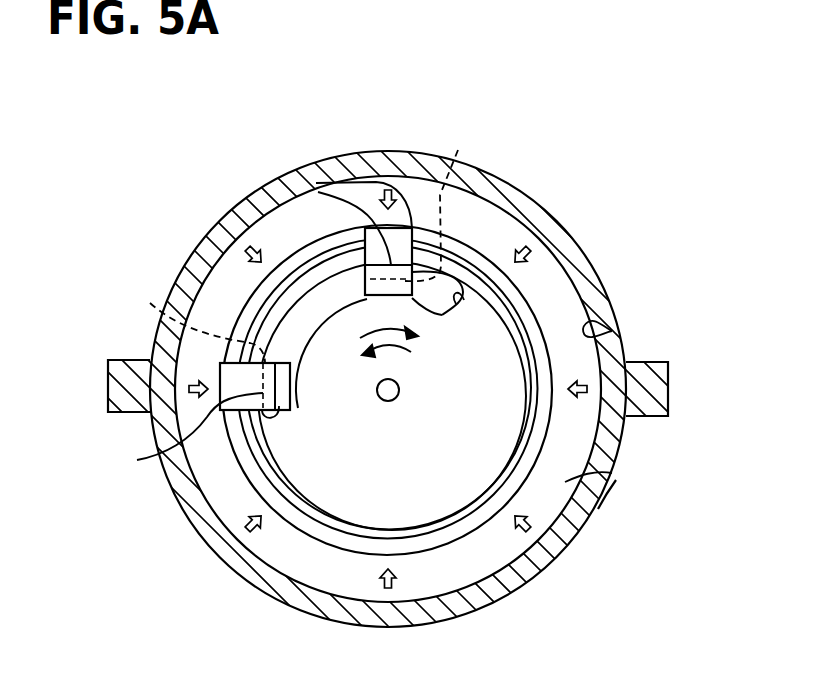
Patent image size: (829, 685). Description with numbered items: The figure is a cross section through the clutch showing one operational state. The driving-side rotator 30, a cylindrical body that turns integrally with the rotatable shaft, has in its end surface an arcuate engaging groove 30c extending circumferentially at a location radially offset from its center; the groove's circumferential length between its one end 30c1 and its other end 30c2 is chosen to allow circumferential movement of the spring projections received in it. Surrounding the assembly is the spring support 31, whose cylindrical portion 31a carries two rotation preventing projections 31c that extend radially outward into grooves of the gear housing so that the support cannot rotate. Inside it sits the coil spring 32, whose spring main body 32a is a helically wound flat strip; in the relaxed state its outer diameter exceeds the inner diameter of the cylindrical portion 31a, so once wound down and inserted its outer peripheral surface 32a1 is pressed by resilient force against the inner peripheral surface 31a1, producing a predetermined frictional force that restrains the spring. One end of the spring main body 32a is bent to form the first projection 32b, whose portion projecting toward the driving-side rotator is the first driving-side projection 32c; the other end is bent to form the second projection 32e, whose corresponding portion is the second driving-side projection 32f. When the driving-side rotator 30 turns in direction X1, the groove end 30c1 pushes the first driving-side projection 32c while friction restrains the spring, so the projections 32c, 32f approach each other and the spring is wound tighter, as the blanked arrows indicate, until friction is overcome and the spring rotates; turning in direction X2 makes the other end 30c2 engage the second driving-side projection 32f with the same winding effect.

The driving-side rotator 30 is at (406, 458).
The engaging groove 30c is at (310, 294).
The one circumferential end of engaging groove 30c1 is at (279, 414).
The other circumferential end of engaging groove 30c2 is at (464, 300).
The spring support 31 is at (546, 206).
The cylindrical portion 31a is at (605, 300).
The inner peripheral surface 31a1 is at (612, 331).
The rotation preventing projections 31c is at (108, 387).
The coil spring 32 is at (545, 285).
The spring main body 32a is at (598, 509).
The outer peripheral surface 32a1 is at (612, 473).
The first projection 32b is at (140, 459).
The first driving-side projection 32c is at (160, 302).
The second projection 32e is at (318, 175).
The second driving-side projection 32f is at (458, 160).
The first rotational direction X1 is at (409, 343).
The second rotational direction X2 is at (366, 362).